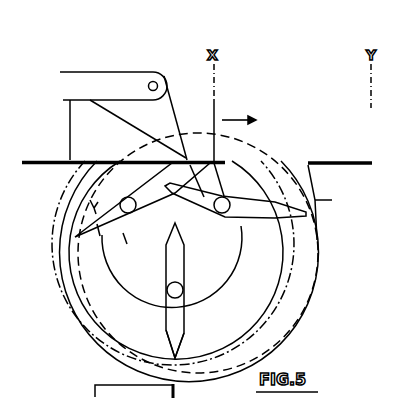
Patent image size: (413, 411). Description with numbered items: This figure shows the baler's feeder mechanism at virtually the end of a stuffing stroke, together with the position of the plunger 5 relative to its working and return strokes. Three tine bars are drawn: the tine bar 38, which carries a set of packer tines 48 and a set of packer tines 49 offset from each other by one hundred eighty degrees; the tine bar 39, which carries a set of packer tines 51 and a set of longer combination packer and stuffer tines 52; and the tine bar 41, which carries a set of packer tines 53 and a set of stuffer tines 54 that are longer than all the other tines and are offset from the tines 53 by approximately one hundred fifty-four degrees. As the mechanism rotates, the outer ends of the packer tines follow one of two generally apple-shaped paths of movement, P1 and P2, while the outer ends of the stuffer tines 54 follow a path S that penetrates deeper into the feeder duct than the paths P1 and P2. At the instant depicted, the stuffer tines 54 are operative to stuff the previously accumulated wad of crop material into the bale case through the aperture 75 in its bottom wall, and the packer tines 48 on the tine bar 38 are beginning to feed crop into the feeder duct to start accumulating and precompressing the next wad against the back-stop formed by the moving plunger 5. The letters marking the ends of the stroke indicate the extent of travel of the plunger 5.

The plunger 5 is at (216, 112).
The tine bar 38 is at (183, 292).
The tine bar 39 is at (129, 214).
The tine bar 41 is at (214, 214).
The packer tines 48 is at (181, 338).
The packer tines 49 is at (184, 250).
The packer tines 51 is at (112, 228).
The combination packer and stuffer tines 52 is at (158, 200).
The packer tines 53 is at (226, 196).
The stuffer tines 54 is at (256, 220).
The aperture 75 is at (296, 148).
The stuffer path S is at (317, 260).
The path of movement P1 is at (258, 316).
The path of movement P2 is at (199, 263).